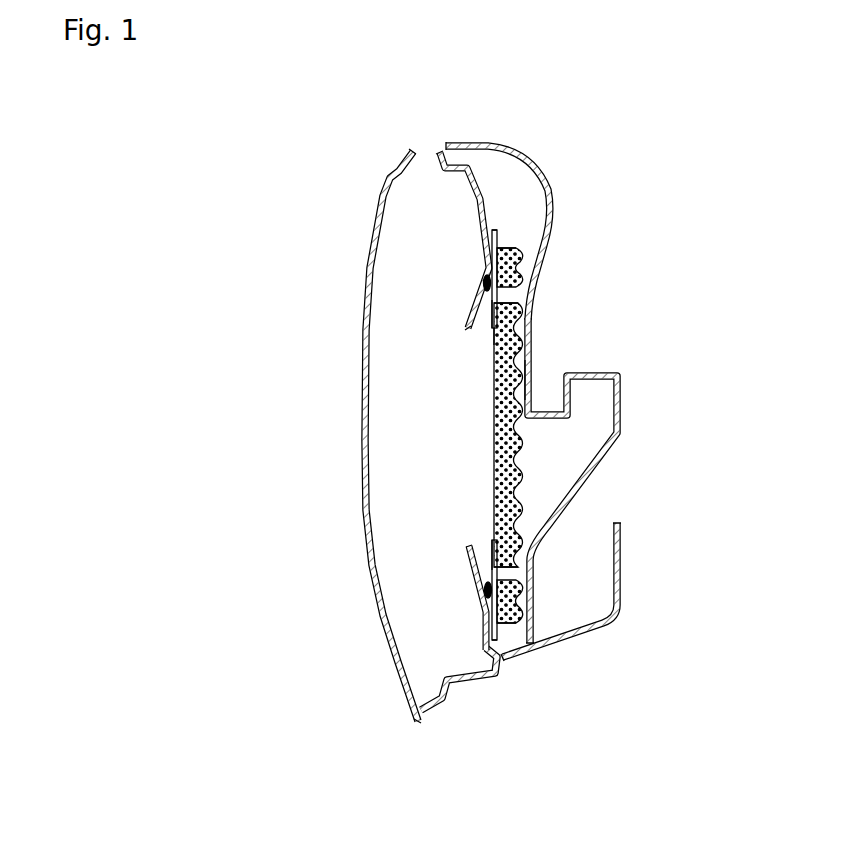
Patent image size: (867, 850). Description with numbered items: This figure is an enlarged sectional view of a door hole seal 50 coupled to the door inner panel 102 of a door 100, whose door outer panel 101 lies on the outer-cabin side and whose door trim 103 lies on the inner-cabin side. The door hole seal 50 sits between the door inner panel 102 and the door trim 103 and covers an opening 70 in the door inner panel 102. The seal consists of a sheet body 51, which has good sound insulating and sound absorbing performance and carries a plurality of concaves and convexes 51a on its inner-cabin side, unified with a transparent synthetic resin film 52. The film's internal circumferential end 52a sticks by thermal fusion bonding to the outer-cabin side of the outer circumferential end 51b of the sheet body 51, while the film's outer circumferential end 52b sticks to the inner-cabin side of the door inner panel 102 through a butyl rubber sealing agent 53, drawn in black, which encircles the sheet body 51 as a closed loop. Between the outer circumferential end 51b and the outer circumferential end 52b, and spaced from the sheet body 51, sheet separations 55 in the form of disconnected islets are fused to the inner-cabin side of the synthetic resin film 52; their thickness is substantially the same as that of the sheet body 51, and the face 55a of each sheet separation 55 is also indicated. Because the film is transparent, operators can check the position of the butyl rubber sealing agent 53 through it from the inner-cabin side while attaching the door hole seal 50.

The door 100 is at (589, 134).
The door outer panel 101 is at (369, 289).
The door inner panel 102 is at (482, 247).
The door trim 103 is at (547, 244).
The door hole seal 50 is at (466, 414).
The sheet body 51 is at (527, 353).
The concaves and convexes 51a is at (524, 374).
The outer circumferential end of the sheet body 51b is at (497, 299).
The synthetic resin film 52 is at (497, 242).
The internal circumferential end 52a is at (492, 340).
The outer circumferential end 52b is at (493, 238).
The butyl rubber sealing agent 53 is at (485, 285).
The sheet separations 55 is at (518, 263).
The outer surface of cushion member 55a is at (530, 245).
The opening 70 is at (491, 334).